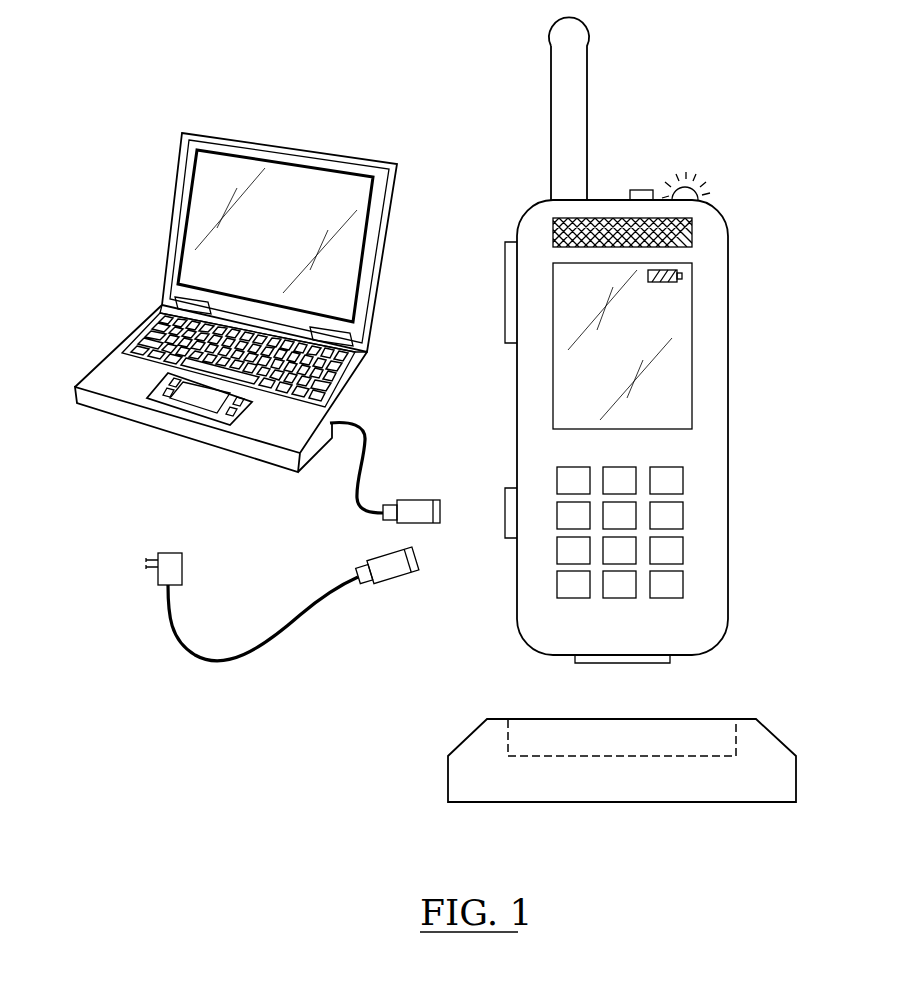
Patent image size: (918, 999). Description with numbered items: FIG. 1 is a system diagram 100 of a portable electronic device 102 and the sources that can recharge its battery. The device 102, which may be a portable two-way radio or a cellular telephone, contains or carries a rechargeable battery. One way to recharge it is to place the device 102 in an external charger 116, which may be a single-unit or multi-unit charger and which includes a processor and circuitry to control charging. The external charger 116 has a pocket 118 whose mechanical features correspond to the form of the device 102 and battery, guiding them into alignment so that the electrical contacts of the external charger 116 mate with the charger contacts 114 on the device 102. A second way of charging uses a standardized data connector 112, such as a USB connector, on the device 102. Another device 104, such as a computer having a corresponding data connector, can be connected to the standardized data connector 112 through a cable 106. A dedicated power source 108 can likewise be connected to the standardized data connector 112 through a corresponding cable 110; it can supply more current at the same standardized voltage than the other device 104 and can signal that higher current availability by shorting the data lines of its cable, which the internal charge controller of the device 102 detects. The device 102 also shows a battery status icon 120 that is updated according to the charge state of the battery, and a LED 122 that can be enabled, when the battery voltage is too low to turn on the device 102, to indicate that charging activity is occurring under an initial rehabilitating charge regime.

The system diagram 100 is at (777, 72).
The device 102 is at (733, 240).
The other device 104 is at (293, 147).
The cable 106 is at (365, 458).
The dedicated power source 108 is at (168, 553).
The corresponding cable 110 is at (322, 597).
The standardized data connector 112 is at (505, 510).
The charger contacts 114 is at (623, 664).
The external charger 116 is at (448, 780).
The pocket 118 is at (531, 728).
The battery status icon 120 is at (663, 283).
The LED 122 is at (708, 193).